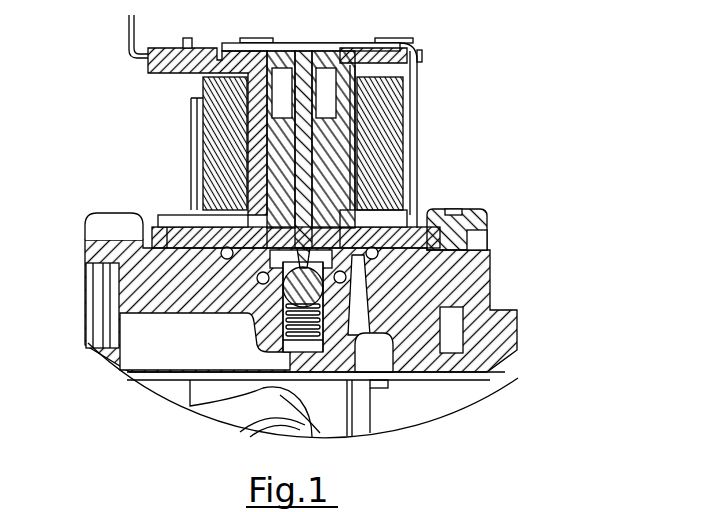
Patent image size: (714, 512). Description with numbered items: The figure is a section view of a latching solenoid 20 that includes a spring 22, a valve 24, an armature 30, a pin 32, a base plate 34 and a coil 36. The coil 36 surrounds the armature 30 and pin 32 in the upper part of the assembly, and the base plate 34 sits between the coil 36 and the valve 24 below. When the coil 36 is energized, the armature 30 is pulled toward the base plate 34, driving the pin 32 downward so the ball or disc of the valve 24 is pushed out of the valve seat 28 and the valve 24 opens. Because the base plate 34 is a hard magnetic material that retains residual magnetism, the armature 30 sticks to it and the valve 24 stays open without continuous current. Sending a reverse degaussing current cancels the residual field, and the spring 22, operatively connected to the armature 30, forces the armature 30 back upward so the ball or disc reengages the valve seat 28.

The latching solenoid 20 is at (462, 57).
The spring 22 is at (323, 316).
The valve 24 is at (403, 252).
The valve seat 28 is at (281, 283).
The armature 30 is at (292, 152).
The pin 32 is at (303, 152).
The base plate 34 is at (412, 245).
The coil 36 is at (227, 145).